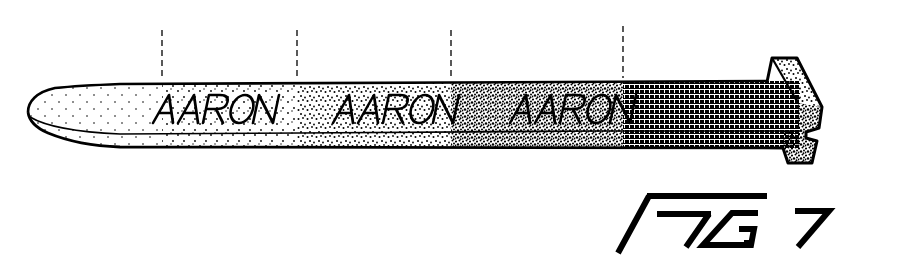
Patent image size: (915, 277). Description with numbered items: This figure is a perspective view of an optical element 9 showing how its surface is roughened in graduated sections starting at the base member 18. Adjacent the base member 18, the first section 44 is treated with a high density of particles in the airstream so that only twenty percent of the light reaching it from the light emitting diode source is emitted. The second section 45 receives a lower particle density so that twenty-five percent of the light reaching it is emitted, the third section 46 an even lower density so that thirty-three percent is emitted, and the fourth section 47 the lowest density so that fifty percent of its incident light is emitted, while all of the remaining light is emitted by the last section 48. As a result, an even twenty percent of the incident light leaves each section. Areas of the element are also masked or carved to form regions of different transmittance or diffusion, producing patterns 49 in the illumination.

The key blank 9 is at (34, 90).
The base member 18 is at (803, 75).
The first section 44 is at (708, 82).
The second section 45 is at (536, 85).
The third section 46 is at (379, 86).
The fourth section 47 is at (237, 86).
The last section 48 is at (101, 99).
The patterns 49 is at (383, 127).